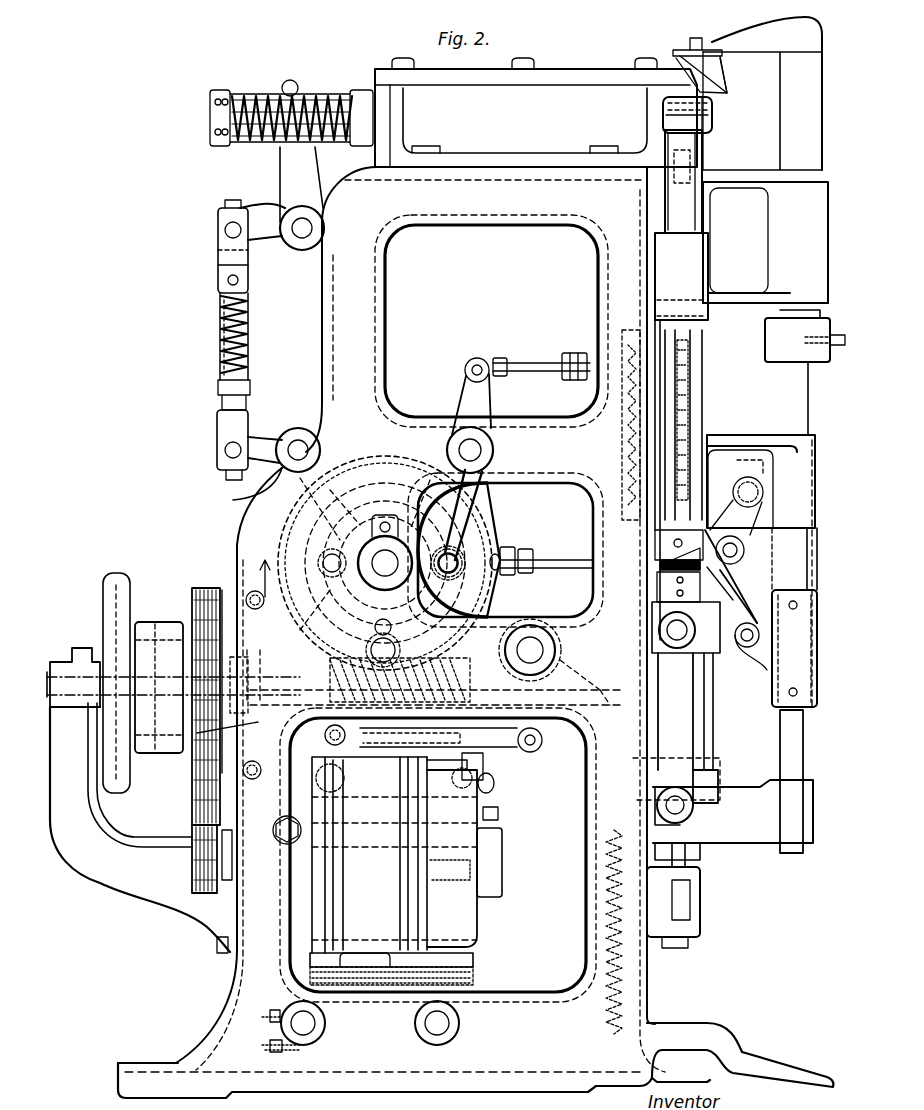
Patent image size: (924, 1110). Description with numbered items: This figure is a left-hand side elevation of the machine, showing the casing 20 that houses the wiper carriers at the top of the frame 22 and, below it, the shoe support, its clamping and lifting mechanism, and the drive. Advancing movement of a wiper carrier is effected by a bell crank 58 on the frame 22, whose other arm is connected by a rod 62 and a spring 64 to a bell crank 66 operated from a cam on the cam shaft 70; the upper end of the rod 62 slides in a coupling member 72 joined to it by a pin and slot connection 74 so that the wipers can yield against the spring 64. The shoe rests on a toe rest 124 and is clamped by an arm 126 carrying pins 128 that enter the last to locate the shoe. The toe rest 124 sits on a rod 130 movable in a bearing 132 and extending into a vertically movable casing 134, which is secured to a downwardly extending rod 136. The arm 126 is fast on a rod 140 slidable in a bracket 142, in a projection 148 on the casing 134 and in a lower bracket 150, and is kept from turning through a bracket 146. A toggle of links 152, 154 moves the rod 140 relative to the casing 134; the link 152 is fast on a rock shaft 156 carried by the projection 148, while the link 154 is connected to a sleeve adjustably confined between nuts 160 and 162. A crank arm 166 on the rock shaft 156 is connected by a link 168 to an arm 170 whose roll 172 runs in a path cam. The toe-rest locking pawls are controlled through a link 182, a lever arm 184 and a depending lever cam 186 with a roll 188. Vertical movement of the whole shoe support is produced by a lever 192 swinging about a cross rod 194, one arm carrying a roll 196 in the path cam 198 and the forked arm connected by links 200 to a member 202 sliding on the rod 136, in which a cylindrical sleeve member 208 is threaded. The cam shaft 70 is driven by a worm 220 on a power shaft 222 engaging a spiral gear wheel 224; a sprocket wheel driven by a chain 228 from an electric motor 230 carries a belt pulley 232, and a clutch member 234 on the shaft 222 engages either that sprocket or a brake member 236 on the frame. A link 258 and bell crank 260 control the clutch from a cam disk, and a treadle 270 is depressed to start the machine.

The casing 20 is at (553, 95).
The frame 22 is at (373, 267).
The bell crank 58 is at (278, 207).
The rod 62 is at (252, 328).
The spring 64 is at (222, 345).
The bell crank 66 is at (236, 499).
The cam shaft 70 is at (375, 560).
The coupling member 72 is at (216, 246).
The pin and slot connection 74 is at (242, 282).
The toe rest 124 is at (706, 118).
The clamp member or arm 126 is at (768, 38).
The pins 128 is at (702, 60).
The rod 130 is at (690, 208).
The bearing 132 is at (700, 258).
The vertically movable casing 134 is at (704, 385).
The rod 136 is at (690, 858).
The rod 140 is at (786, 143).
The bracket 142 is at (765, 242).
The bracket 146 is at (766, 357).
The projection 148 is at (748, 440).
The bracket 150 is at (773, 835).
The link 152 is at (735, 562).
The link 154 is at (722, 580).
The rock shaft 156 is at (768, 657).
The nut 160 is at (812, 595).
The nut 162 is at (810, 712).
The crank arm 166 is at (800, 543).
The link 168 is at (558, 557).
The arm 170 is at (493, 493).
The roll 172 is at (503, 572).
The link 182 is at (540, 360).
The lever arm 184 is at (490, 394).
The lever cam 186 is at (500, 478).
The roll 188 is at (462, 540).
The lever 192 is at (548, 668).
The cross rod 194 is at (540, 650).
The roll 196 is at (402, 643).
The path cam 198 is at (315, 625).
The links 200 is at (698, 750).
The member 202 is at (714, 797).
The cylindrical sleeve member 208 is at (713, 707).
The worm 220 is at (413, 718).
The power shaft 222 is at (82, 662).
The spiral gear wheel 224 is at (382, 455).
The chain 228 is at (196, 812).
The electric motor 230 is at (406, 869).
The belt pulley 232 is at (170, 625).
The clutch member 234 is at (197, 768).
The brake member 236 is at (233, 603).
The link 258 is at (505, 750).
The bell crank 260 is at (548, 705).
The treadle 270 is at (712, 1032).